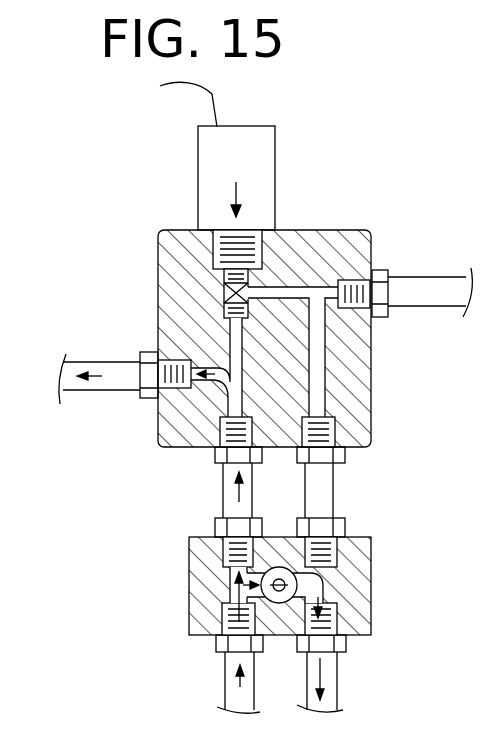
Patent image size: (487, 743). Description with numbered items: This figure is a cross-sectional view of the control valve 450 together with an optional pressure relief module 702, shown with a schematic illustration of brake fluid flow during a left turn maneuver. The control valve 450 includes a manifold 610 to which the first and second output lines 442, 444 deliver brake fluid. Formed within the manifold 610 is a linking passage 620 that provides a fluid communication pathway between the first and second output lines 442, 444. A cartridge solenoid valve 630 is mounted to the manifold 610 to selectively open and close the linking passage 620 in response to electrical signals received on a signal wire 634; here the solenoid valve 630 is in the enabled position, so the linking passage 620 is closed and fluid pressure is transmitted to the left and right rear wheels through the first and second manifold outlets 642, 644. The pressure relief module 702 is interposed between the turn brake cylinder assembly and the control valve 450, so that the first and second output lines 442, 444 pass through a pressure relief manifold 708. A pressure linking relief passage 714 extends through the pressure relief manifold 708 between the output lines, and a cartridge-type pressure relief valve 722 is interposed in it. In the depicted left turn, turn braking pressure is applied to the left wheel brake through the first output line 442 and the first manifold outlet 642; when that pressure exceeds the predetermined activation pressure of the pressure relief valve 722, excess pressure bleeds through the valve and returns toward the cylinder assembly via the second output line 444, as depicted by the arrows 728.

The signal wire 634 is at (212, 94).
The cartridge solenoid valve 630 is at (268, 151).
The linking passage 620 is at (238, 345).
The manifold 610 is at (168, 249).
The second manifold outlet 644 is at (433, 282).
The first manifold outlet 642 is at (83, 362).
The control valve 450 is at (403, 416).
The pressure relief module 702 is at (400, 559).
The pressure relief manifold 708 is at (189, 570).
The pressure linking relief passage 714 is at (227, 620).
The pressure relief valve 722 is at (298, 577).
The arrows 728 is at (320, 670).
The first output line 442 is at (225, 688).
The second output line 444 is at (337, 695).